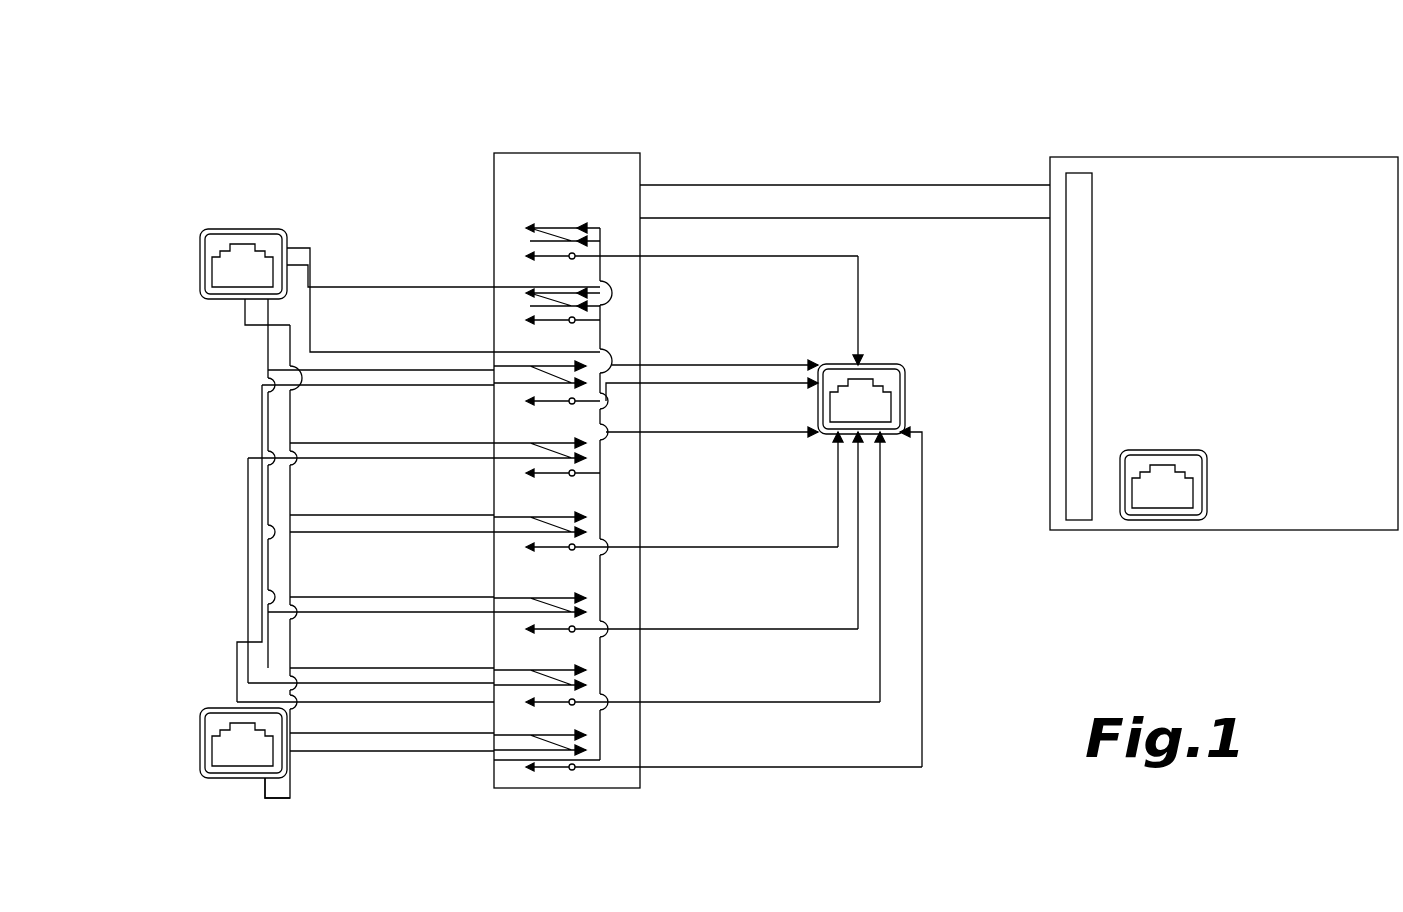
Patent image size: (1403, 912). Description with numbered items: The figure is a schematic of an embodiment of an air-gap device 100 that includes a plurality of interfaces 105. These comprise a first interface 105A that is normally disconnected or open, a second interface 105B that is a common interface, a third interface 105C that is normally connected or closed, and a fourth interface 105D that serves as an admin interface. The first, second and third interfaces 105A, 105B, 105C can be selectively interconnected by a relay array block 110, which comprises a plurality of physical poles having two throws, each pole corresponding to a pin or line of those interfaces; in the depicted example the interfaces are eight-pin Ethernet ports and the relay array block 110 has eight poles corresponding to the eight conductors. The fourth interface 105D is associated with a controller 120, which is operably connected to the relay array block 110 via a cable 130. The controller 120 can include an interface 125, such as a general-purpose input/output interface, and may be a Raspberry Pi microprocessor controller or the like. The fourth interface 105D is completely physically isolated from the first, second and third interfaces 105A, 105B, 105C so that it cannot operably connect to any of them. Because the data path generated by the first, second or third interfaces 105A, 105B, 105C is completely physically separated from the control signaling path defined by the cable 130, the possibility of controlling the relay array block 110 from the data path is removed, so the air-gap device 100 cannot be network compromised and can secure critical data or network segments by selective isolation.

The air-gap device 100 is at (955, 118).
The interfaces 105 is at (200, 745).
The first interface 105A is at (888, 364).
The second interface 105B is at (205, 800).
The third interface 105C is at (200, 265).
The fourth interface 105D is at (1210, 450).
The relay array block 110 is at (645, 786).
The controller 120 is at (1211, 389).
The interface 125 is at (1095, 295).
The cable 130 is at (728, 185).